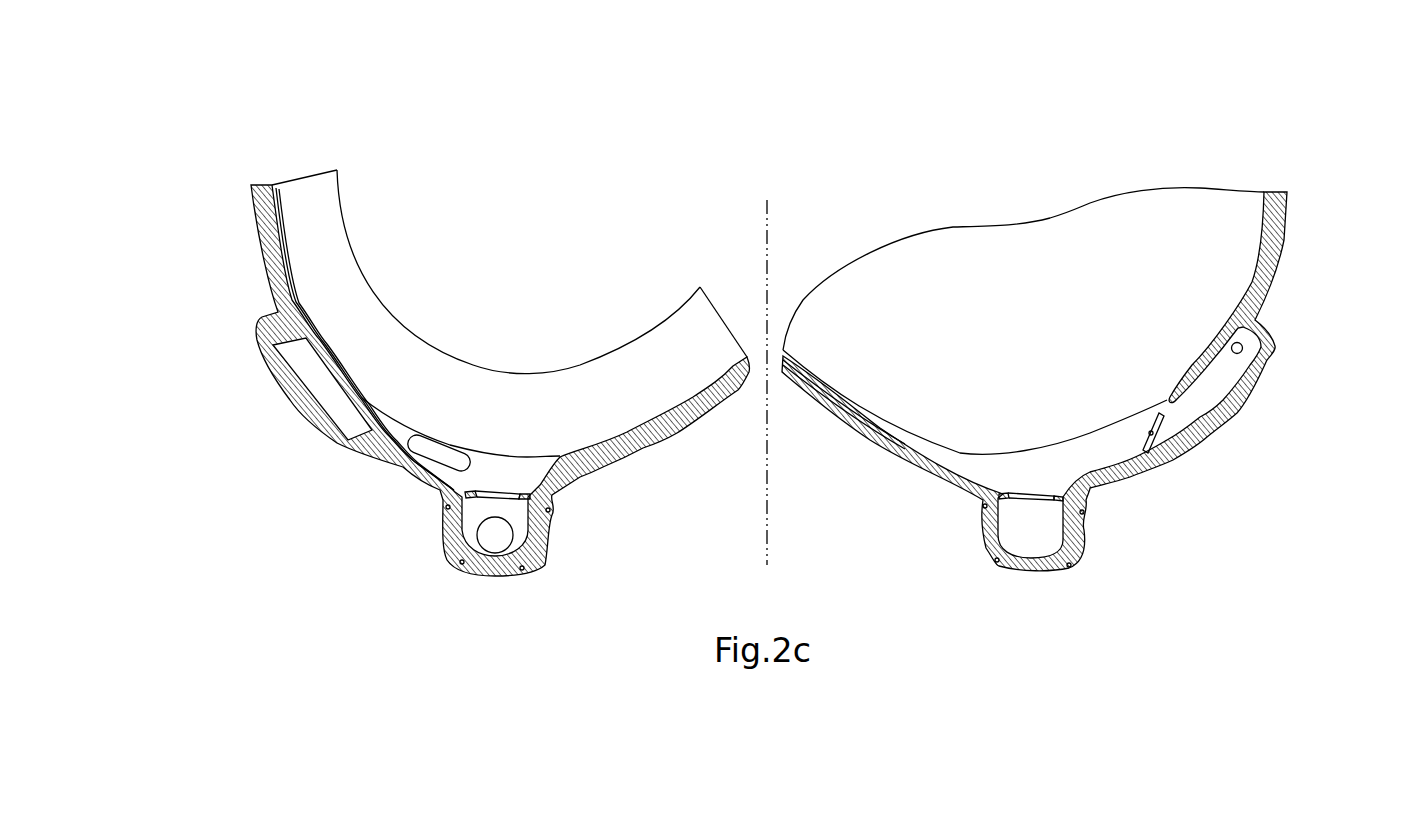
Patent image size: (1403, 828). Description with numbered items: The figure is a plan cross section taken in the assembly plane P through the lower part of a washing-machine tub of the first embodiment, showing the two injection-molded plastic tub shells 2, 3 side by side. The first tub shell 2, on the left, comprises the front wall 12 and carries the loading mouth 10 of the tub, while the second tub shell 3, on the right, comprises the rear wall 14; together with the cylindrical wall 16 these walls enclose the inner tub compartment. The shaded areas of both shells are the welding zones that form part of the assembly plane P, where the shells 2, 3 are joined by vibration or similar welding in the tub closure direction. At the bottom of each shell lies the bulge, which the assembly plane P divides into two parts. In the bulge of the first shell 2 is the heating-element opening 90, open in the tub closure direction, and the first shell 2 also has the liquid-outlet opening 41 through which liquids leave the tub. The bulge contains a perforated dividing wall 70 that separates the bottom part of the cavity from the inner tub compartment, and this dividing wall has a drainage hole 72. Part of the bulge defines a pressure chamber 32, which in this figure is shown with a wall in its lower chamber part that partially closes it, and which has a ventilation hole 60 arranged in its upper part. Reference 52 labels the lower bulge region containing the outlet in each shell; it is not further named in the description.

The first tub shell 2 is at (256, 228).
The second tub shell 3 is at (1285, 238).
The assembly plane P is at (259, 186).
The loading mouth 10 is at (365, 282).
The front wall 12 is at (638, 380).
The rear wall 14 is at (920, 268).
The cylindrical wall 16 is at (708, 398).
The pressure chamber 32 is at (358, 418).
The liquid-outlet opening 41 is at (500, 537).
The pocket 52 is at (475, 512).
The ventilation hole 60 is at (1223, 330).
The perforated dividing wall 70 is at (522, 497).
The drainage hole 72 is at (496, 493).
The heating-element opening 90 is at (437, 452).